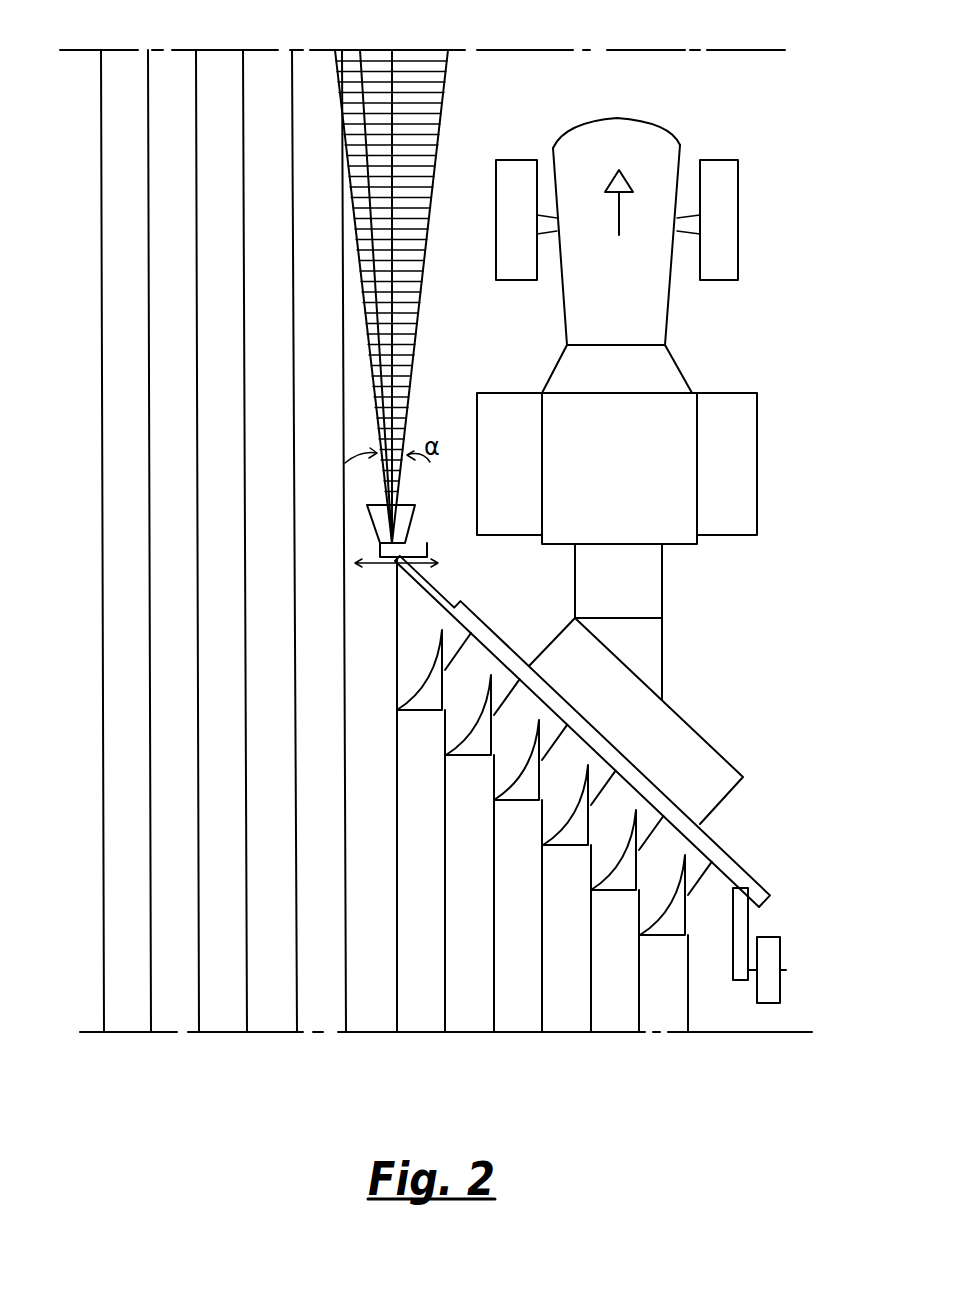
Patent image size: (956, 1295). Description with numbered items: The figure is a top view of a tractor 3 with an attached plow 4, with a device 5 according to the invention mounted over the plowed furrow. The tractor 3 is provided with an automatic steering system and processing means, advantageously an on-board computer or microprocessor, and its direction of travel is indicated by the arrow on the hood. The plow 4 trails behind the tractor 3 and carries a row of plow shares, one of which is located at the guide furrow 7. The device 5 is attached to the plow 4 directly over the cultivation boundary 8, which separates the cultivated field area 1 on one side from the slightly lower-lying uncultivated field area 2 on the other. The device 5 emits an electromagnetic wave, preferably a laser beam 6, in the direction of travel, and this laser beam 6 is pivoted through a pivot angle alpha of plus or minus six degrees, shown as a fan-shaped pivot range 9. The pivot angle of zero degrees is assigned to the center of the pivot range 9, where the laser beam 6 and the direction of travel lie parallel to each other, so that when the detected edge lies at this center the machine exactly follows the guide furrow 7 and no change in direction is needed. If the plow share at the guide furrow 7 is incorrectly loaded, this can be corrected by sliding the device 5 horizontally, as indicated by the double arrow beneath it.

The cultivated field area 1 is at (168, 163).
The uncultivated field area 2 is at (666, 434).
The tractor 3 is at (652, 430).
The plow 4 is at (733, 868).
The device 5 is at (375, 514).
The laser beam 6 is at (362, 73).
The guide furrow 7 is at (365, 792).
The cultivation boundary 8 is at (392, 95).
The pivot range 9 is at (415, 130).